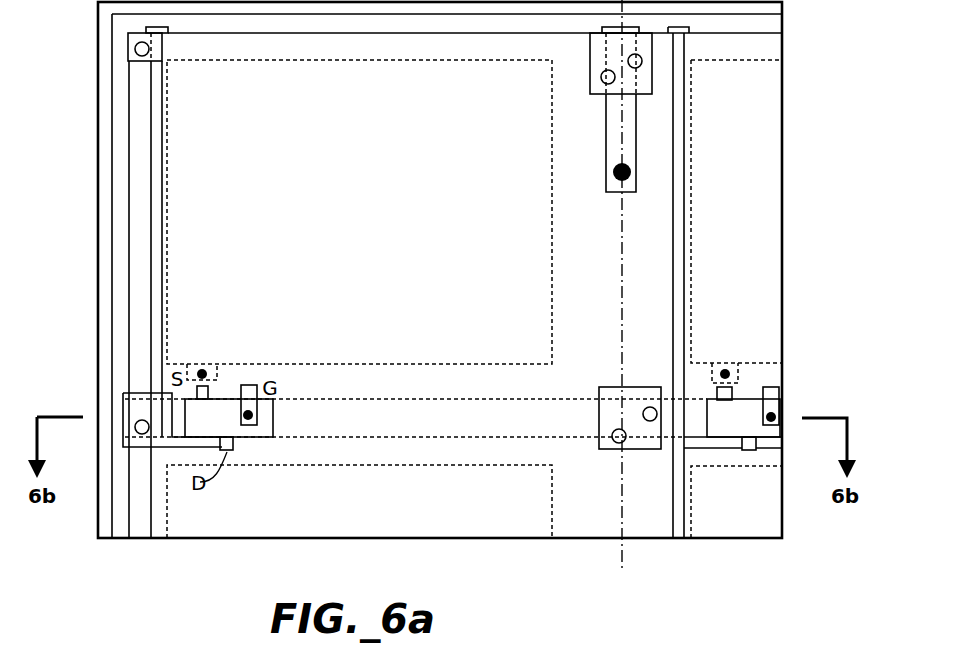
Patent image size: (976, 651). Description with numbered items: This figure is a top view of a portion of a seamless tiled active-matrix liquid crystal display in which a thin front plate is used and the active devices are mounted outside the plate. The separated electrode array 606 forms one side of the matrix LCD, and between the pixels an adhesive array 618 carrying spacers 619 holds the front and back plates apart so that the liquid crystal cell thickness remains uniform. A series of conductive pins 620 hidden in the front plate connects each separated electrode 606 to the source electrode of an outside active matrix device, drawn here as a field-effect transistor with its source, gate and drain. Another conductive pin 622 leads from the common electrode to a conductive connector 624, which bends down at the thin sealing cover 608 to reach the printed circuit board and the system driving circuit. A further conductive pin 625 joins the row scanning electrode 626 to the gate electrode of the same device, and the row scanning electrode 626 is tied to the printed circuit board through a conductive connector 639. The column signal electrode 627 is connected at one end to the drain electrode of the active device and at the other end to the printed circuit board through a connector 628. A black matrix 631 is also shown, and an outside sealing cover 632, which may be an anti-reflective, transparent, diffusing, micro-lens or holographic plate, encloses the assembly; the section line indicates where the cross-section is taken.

The separated electrode array 606 is at (441, 528).
The thin sealing cover 608 is at (121, 364).
The adhesive array 618 is at (643, 87).
The spacer 619 is at (641, 64).
The conductive pins 620 is at (202, 369).
The conductive pin 622 is at (620, 203).
The conductive connector 624 is at (603, 125).
The conductive pin 625 is at (248, 420).
The row scanning electrode 626 is at (355, 425).
The column signal electrode 627 is at (155, 528).
The connector 628 is at (145, 28).
The black matrix 631 is at (633, 530).
The outside sealing cover 632 is at (102, 530).
The conductive connector 639 is at (124, 410).